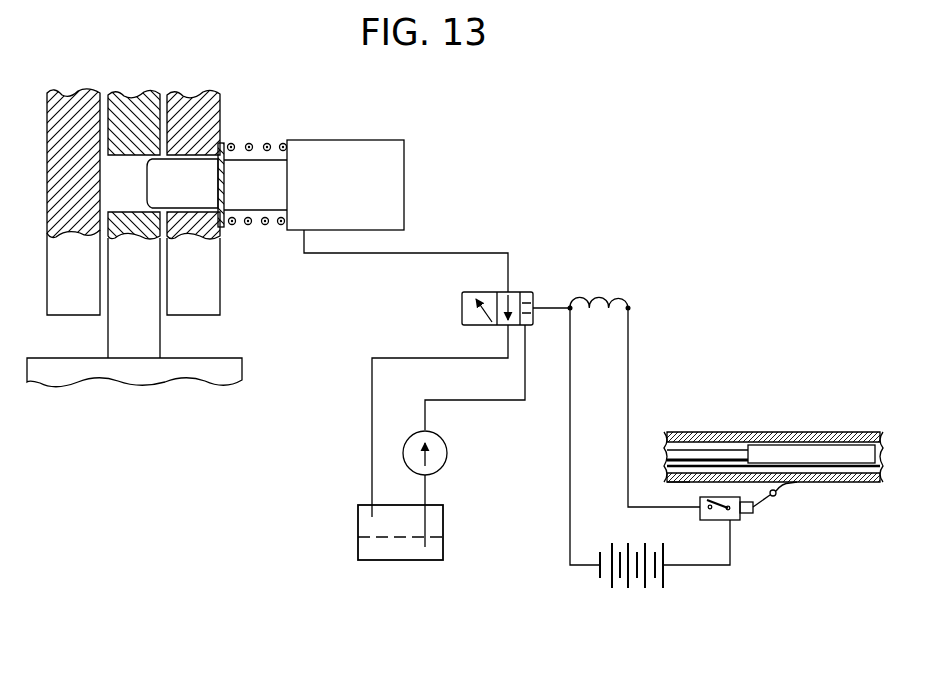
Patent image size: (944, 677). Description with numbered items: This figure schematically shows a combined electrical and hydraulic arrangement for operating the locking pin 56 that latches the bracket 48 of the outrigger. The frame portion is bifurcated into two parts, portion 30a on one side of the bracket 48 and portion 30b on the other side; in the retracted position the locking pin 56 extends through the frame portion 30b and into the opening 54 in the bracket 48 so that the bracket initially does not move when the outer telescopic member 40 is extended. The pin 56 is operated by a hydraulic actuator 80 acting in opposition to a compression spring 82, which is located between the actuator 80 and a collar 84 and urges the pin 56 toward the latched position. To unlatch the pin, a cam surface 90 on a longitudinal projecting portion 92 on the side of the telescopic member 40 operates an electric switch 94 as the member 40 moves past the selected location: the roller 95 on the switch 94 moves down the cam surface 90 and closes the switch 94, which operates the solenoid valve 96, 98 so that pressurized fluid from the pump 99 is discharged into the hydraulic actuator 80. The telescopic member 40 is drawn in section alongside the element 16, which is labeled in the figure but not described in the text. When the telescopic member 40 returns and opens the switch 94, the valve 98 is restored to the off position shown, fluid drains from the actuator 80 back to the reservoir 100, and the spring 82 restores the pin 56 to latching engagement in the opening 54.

The frame portion 30a is at (68, 97).
The frame portion 30b is at (192, 101).
The bracket 48 is at (135, 103).
The opening 54 is at (134, 217).
The locking pin 56 is at (194, 195).
The hydraulic actuator 80 is at (367, 140).
The compression spring 82 is at (268, 142).
The collar 84 is at (227, 226).
The solenoid valve 98 is at (519, 290).
The solenoid 96 is at (597, 298).
The pump 99 is at (449, 456).
The reservoir 100 is at (358, 523).
The tube 16 is at (845, 438).
The outer telescopic member 40 is at (855, 483).
The longitudinal projecting portion 92 is at (683, 485).
The electric switch 94 is at (735, 522).
The roller 95 is at (776, 498).
The cam surface 90 is at (791, 487).